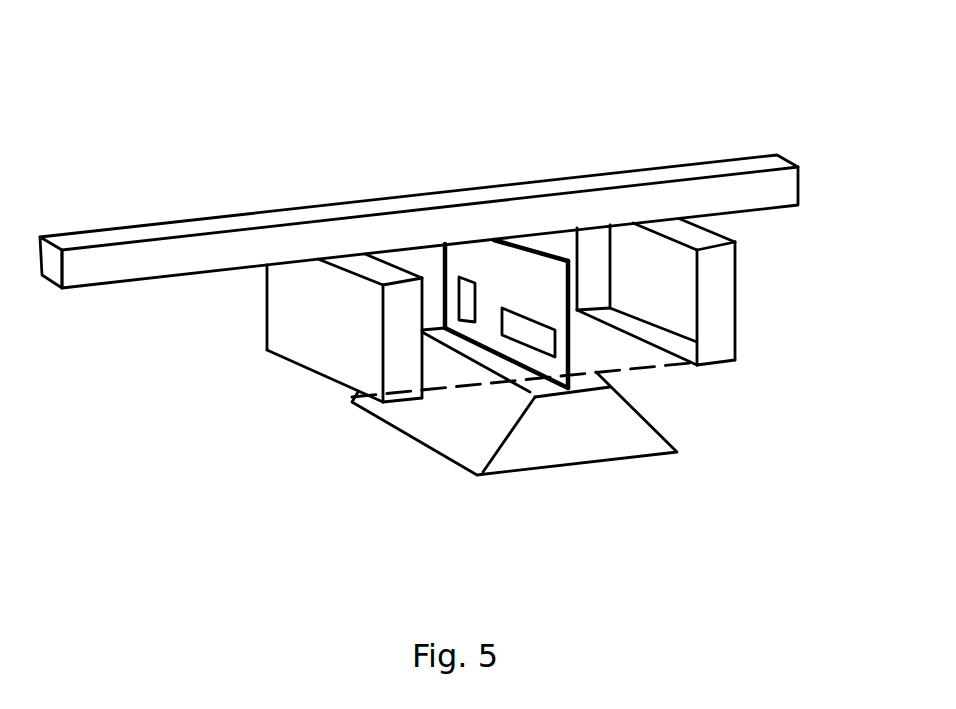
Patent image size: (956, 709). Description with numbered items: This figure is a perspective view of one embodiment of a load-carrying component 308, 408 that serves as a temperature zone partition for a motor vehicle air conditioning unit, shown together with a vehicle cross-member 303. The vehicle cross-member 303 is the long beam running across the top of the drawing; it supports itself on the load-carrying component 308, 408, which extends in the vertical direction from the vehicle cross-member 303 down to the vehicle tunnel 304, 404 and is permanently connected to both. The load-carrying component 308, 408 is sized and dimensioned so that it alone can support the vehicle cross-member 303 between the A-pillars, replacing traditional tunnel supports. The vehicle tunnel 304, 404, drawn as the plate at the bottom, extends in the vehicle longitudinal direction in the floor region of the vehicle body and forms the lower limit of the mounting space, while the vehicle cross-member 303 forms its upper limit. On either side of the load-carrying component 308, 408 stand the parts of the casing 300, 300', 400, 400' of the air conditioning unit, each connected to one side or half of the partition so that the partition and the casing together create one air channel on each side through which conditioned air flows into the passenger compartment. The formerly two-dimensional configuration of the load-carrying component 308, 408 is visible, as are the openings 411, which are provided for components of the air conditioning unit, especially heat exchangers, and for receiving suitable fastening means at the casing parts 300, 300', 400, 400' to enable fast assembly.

The vehicle cross-member 303 is at (759, 161).
The casing 300 is at (755, 313).
The casing 400 is at (755, 313).
The casing 300' is at (317, 364).
The casing 400' is at (317, 364).
The load-carrying component 308 is at (429, 204).
The load-carrying component 408 is at (429, 204).
The openings 411 is at (460, 285).
The vehicle tunnel 304 is at (614, 444).
The vehicle tunnel 404 is at (590, 435).